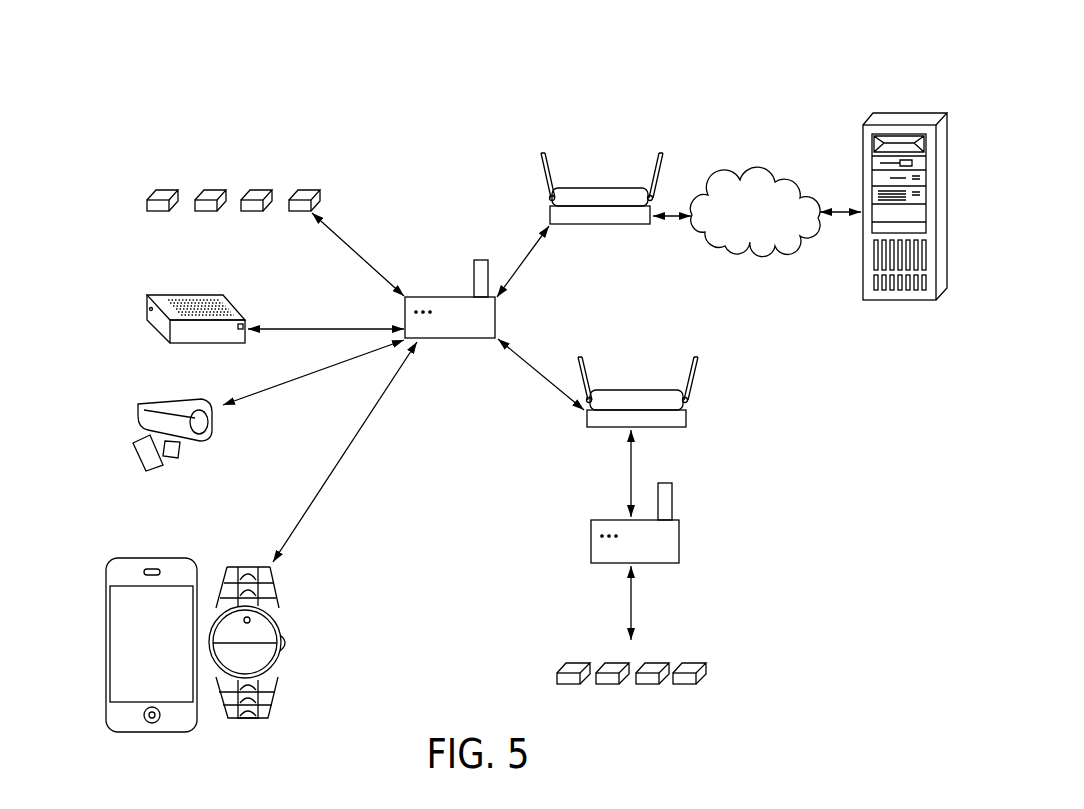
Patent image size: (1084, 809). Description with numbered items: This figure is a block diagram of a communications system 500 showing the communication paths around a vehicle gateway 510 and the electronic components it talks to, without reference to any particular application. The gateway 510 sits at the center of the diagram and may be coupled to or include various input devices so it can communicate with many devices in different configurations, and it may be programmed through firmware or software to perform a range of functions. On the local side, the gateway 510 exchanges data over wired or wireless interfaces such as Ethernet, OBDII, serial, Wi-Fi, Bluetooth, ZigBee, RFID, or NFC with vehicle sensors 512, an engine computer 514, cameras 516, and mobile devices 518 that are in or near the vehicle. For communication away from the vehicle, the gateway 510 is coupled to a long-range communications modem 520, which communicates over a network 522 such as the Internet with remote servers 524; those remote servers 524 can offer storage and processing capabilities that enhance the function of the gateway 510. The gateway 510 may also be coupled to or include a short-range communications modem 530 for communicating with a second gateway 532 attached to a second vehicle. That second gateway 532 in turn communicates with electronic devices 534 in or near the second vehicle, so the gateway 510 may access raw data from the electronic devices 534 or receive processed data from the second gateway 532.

The system 500 is at (95, 80).
The gateway 510 is at (433, 297).
The vehicle sensors 512 is at (213, 190).
The engine computer 514 is at (147, 308).
The cameras 516 is at (138, 410).
The mobile devices 518 is at (106, 575).
The long-range communications modem 520 is at (598, 187).
The network 522 is at (743, 164).
The remote servers 524 is at (902, 110).
The short-range communications modem 530 is at (693, 402).
The second gateway 532 is at (682, 542).
The electronic devices 534 is at (707, 668).